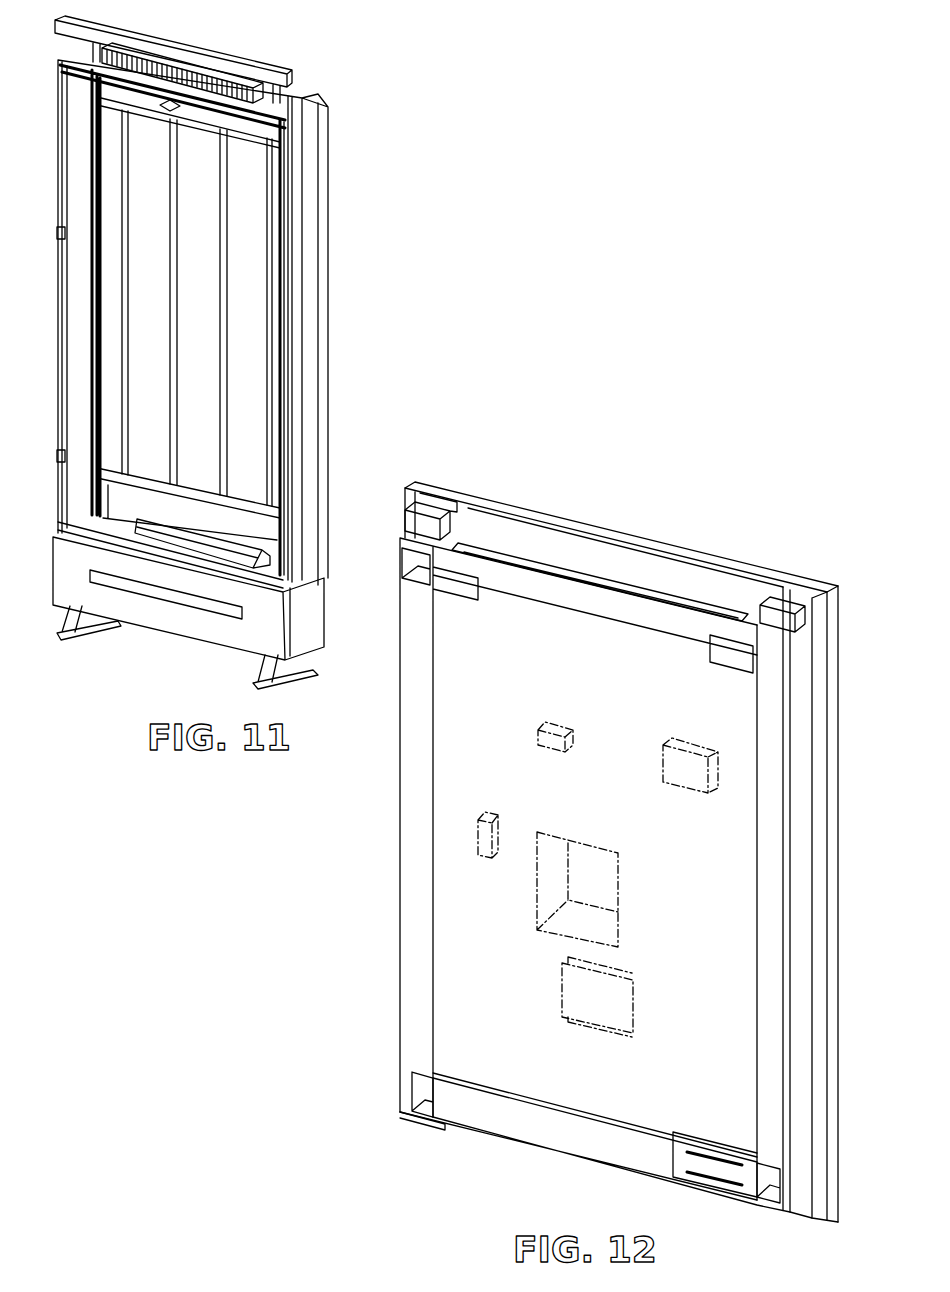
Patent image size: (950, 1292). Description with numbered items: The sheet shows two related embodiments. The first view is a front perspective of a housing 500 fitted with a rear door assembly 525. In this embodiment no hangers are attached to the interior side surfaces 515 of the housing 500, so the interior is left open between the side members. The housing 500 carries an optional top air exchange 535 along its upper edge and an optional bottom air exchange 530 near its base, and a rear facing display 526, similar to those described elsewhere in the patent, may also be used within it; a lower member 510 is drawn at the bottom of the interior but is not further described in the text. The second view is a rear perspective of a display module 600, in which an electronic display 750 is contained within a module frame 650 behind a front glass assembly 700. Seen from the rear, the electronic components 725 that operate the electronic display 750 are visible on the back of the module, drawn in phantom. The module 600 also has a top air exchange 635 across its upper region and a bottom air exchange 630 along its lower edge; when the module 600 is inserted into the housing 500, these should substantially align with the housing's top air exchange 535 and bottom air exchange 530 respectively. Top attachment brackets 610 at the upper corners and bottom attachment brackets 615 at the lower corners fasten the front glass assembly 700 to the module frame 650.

In FIG. 11, the housing 500 is at (332, 82).
In FIG. 11, the bottom frame member 510 is at (69, 522).
In FIG. 11, the interior side surfaces 515 is at (80, 156).
In FIG. 11, the rear door assembly 525 is at (331, 196).
In FIG. 11, the rear facing display 526 is at (146, 420).
In FIG. 11, the bottom air exchange 530 is at (218, 553).
In FIG. 11, the top air exchange 535 is at (186, 84).
In FIG. 12, the display module 600 is at (692, 527).
In FIG. 12, the top attachment brackets 610 is at (427, 507).
In FIG. 12, the bottom attachment brackets 615 is at (441, 1131).
In FIG. 12, the bottom air exchange 630 is at (546, 1160).
In FIG. 12, the top air exchange 635 is at (576, 575).
In FIG. 12, the module frame 650 is at (800, 780).
In FIG. 12, the front glass assembly 700 is at (558, 520).
In FIG. 12, the electronic components 725 is at (537, 917).
In FIG. 12, the electronic display 750 is at (524, 500).